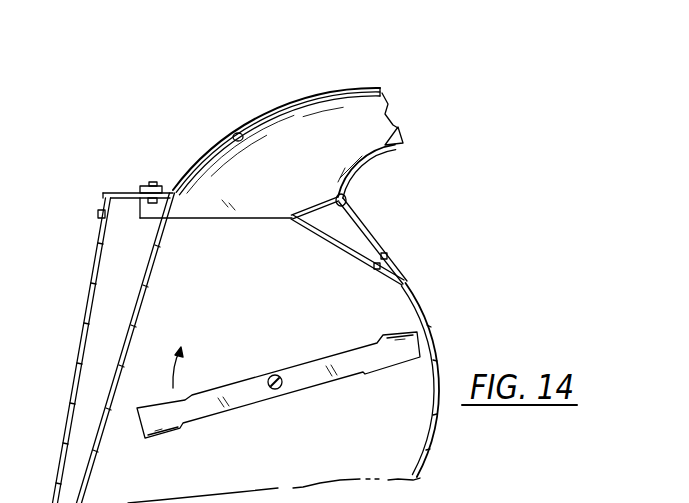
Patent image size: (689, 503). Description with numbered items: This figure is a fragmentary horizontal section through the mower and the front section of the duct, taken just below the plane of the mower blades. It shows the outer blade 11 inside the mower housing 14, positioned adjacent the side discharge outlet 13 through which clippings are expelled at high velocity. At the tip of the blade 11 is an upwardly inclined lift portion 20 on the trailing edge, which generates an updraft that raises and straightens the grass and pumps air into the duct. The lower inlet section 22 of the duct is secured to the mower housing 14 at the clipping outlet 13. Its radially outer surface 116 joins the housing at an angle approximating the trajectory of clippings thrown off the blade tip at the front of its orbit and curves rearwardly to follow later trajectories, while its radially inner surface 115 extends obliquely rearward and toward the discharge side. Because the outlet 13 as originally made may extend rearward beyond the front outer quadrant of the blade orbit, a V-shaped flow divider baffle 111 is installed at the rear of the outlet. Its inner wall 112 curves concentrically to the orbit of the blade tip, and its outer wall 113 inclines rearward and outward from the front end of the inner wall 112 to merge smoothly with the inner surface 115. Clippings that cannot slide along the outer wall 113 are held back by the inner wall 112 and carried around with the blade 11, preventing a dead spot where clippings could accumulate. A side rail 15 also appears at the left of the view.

The outer blade 11 is at (227, 400).
The side discharge outlet 13 is at (222, 203).
The mower housing 14 is at (425, 303).
The side rail 15 is at (85, 487).
The lift portions 20 is at (397, 330).
The lower inlet section 22 is at (324, 89).
The flow divider baffle 111 is at (296, 213).
The inner wall 112 is at (338, 237).
The outer wall 113 is at (332, 200).
The radially inner surface 115 is at (397, 137).
The radially outer surface 116 is at (237, 138).